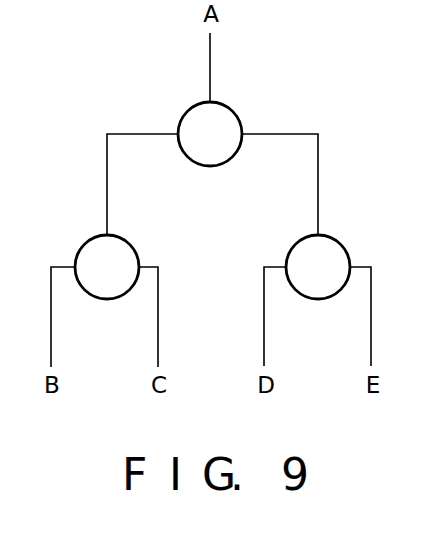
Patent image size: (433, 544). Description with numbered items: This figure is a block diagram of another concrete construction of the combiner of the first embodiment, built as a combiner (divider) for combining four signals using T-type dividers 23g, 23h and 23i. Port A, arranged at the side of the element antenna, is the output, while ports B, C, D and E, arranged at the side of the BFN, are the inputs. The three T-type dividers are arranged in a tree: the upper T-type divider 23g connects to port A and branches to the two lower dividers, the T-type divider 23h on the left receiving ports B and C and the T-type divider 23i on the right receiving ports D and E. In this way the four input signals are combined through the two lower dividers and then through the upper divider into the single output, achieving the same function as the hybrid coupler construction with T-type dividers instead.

The T-type divider 23g is at (239, 121).
The T-type divider 23h is at (137, 256).
The T-type divider 23i is at (348, 256).